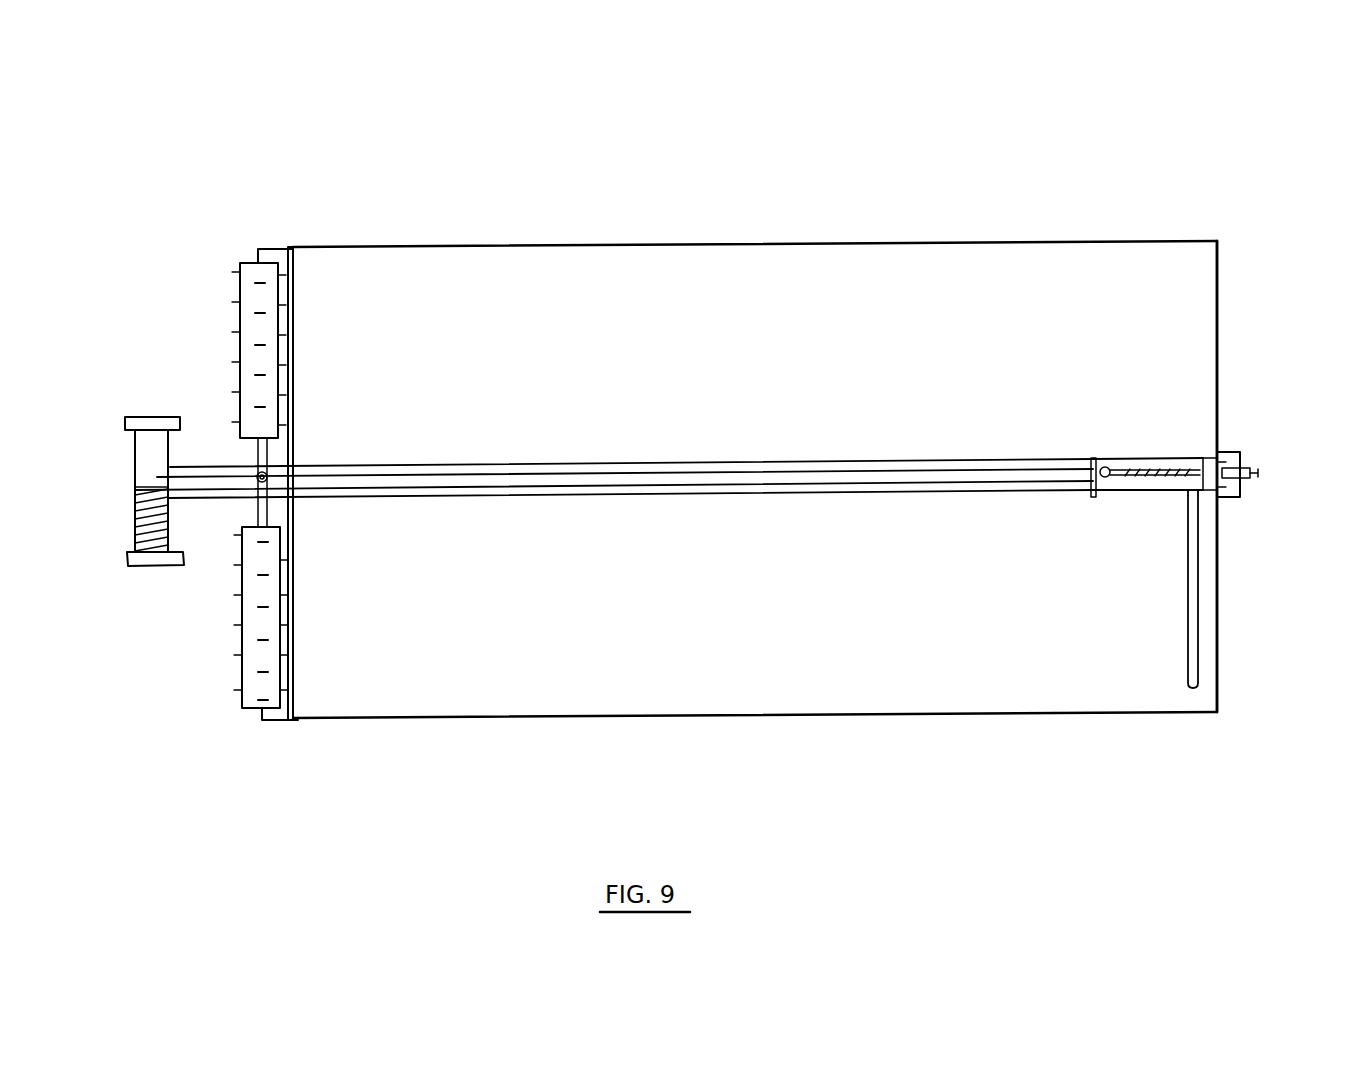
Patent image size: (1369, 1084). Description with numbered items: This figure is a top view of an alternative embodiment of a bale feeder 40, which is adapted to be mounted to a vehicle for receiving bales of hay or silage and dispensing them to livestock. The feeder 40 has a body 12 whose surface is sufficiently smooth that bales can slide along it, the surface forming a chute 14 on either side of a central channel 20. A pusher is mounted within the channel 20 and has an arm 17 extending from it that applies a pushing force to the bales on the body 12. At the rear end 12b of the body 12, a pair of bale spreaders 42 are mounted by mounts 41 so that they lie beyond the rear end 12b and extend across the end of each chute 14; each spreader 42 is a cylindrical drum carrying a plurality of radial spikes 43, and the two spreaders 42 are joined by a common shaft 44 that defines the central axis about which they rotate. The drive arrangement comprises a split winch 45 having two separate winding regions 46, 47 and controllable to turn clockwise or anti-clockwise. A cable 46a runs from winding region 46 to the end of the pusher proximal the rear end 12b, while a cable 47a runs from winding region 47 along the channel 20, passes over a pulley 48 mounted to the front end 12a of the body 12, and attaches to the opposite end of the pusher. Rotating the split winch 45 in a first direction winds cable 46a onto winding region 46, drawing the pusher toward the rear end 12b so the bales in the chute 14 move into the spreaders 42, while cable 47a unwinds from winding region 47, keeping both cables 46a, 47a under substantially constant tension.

The body 12 is at (920, 243).
The front end 12a is at (1218, 698).
The rear end 12b is at (272, 740).
The chute 14 is at (755, 479).
The arm 17 is at (1200, 620).
The channel 20 is at (808, 495).
The feeder 40 is at (1250, 220).
The mount 41 is at (280, 247).
The bale spreader 42 is at (250, 263).
The spike 43 is at (243, 655).
The common shaft 44 is at (255, 462).
The split winch 45 is at (114, 454).
The winding region 46 is at (135, 455).
The cable 46a is at (945, 465).
The winding region 47 is at (135, 522).
The cable 47a is at (1258, 465).
The pulley 48 is at (1240, 455).